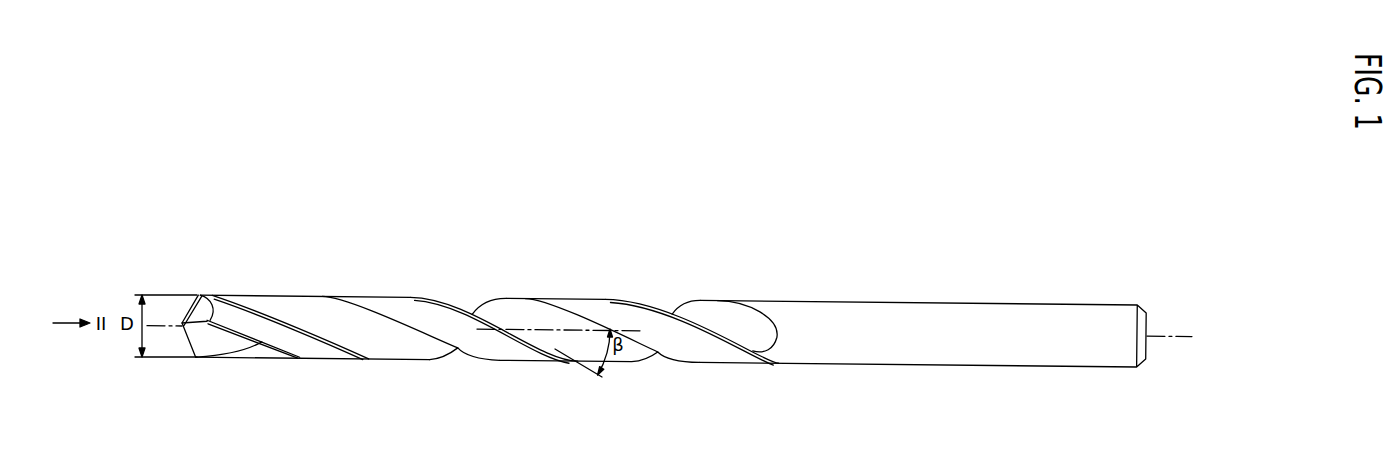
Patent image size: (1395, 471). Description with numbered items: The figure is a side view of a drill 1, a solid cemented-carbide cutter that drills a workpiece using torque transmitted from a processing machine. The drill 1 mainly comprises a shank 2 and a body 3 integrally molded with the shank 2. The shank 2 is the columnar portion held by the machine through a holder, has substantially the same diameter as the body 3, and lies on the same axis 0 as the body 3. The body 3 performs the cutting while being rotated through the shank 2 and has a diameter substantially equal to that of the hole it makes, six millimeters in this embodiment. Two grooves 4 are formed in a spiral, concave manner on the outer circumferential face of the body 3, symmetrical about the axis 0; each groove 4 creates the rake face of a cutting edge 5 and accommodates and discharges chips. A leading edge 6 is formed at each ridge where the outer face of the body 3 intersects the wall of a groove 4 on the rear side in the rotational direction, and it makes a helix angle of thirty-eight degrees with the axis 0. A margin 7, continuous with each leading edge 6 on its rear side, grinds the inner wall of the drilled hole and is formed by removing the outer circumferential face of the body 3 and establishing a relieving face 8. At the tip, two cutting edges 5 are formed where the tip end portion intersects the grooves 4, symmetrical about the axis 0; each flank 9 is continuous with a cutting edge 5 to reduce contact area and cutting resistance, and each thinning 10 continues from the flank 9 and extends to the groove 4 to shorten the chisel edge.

The axis 0 is at (1163, 332).
The drill 1 is at (942, 183).
The shank 2 is at (1072, 278).
The body 3 is at (690, 272).
The groove 4 is at (306, 302).
The cutting edge 5 is at (180, 320).
The leading edge 6 is at (248, 297).
The margin 7 is at (268, 306).
The relieving face 8 is at (298, 346).
The flank 9 is at (211, 312).
The thinning 10 is at (192, 349).